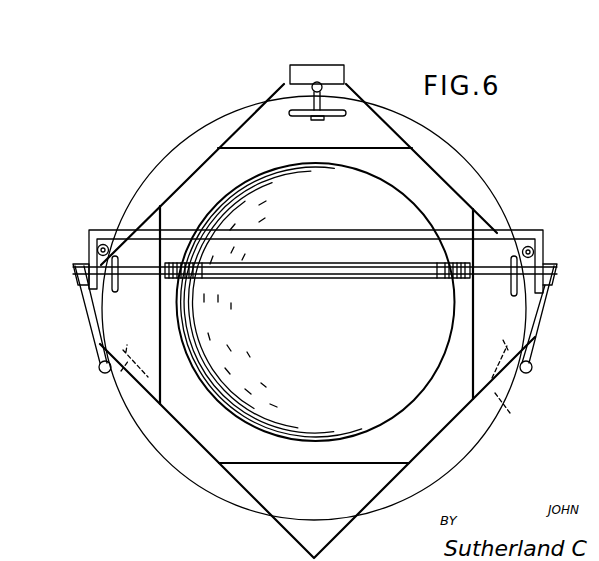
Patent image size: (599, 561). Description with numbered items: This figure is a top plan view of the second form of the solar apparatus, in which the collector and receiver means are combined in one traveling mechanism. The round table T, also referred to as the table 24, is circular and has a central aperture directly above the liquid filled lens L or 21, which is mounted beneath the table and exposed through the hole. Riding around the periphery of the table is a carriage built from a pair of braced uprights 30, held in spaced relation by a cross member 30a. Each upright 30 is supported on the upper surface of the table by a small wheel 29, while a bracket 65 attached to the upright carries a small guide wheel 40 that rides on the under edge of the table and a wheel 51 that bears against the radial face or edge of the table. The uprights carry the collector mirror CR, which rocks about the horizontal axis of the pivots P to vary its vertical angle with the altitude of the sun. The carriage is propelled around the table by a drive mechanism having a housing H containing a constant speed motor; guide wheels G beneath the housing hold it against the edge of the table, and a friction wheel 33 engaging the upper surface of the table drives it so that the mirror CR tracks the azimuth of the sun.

The table 24 is at (165, 163).
The round table T is at (462, 165).
The housing H is at (320, 82).
The guide wheels G is at (315, 81).
The friction wheel 33 is at (326, 119).
The cross member 30a is at (325, 229).
The mirror CR is at (348, 281).
The upright 30 is at (82, 285).
The bracket 65 is at (92, 336).
The wheel 51 is at (535, 252).
The small wheel 29 is at (116, 292).
The pivot P is at (121, 266).
The liquid filled lens 21 is at (297, 344).
The lens L is at (415, 402).
The small guide wheel 40 is at (137, 390).